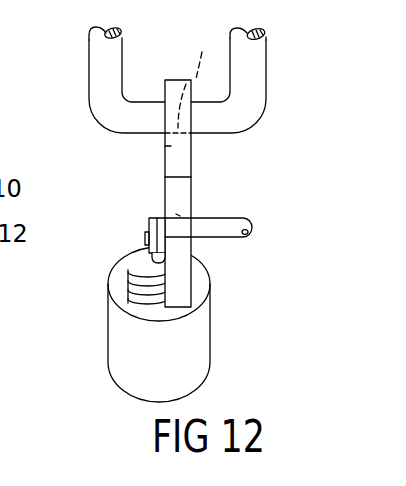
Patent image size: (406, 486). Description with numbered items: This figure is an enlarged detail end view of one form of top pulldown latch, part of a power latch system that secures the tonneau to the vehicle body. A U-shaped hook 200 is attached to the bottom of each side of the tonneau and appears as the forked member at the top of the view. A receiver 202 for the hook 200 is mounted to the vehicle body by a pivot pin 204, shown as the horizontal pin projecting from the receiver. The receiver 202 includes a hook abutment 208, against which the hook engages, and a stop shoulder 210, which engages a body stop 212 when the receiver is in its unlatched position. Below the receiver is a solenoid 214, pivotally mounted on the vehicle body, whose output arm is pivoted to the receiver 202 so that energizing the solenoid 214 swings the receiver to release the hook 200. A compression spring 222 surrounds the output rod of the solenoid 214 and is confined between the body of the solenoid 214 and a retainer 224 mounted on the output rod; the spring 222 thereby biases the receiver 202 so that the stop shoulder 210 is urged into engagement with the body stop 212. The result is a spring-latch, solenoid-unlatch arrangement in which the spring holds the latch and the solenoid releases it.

The U-shaped hook 200 is at (98, 75).
The receiver 202 is at (171, 147).
The pivot pin 204 is at (214, 230).
The hook abutment 208 is at (202, 52).
The stop shoulder 210 is at (181, 178).
The body stop 212 is at (178, 215).
The solenoid 214 is at (190, 356).
The compression spring 222 is at (130, 278).
The retainer 224 is at (146, 236).